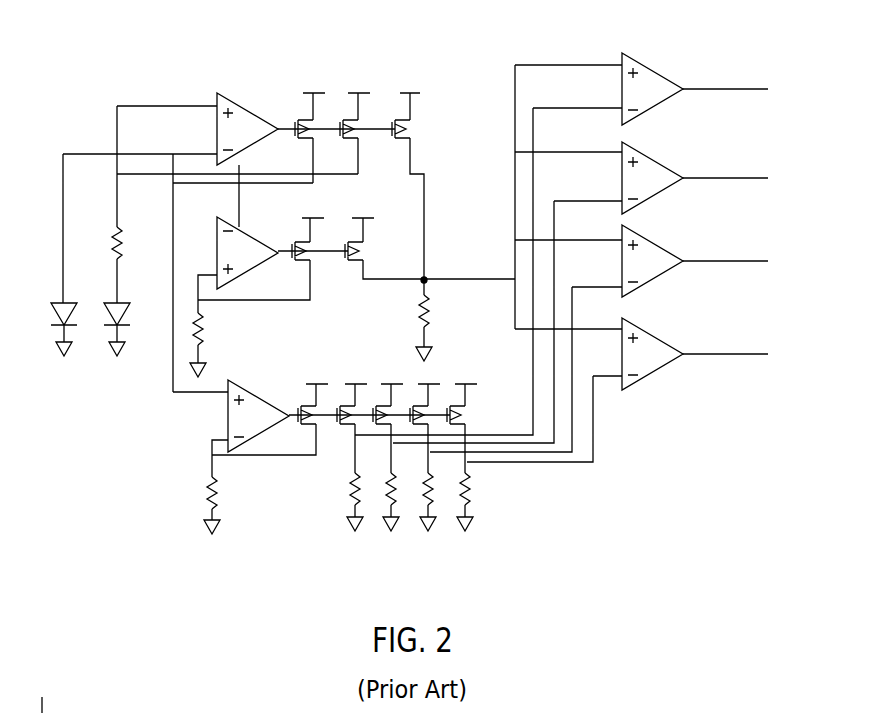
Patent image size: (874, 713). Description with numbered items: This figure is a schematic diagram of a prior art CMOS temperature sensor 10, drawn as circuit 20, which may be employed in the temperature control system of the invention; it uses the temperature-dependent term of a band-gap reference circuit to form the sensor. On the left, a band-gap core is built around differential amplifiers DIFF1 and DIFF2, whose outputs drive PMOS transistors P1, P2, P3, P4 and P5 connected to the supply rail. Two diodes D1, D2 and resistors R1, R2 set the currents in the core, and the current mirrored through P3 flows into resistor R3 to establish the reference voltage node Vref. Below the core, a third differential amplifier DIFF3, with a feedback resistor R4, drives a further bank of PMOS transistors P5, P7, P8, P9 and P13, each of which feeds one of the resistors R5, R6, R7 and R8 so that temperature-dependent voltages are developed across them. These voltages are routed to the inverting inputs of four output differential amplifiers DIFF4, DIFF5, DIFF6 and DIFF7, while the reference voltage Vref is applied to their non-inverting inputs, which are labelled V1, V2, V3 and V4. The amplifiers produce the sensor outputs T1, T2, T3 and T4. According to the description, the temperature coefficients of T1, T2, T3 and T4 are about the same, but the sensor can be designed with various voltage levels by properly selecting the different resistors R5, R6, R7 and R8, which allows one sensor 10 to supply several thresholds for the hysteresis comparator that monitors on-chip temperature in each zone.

The reference voltage generating circuit 20 is at (392, 21).
The temperature sensor 10 is at (165, 480).
The differential amplifier DIFF1 is at (248, 120).
The differential amplifier DIFF2 is at (255, 243).
The differential amplifier DIFF3 is at (262, 408).
The differential amplifier DIFF4 is at (662, 81).
The differential amplifier DIFF5 is at (662, 172).
The differential amplifier DIFF6 is at (662, 259).
The differential amplifier DIFF7 is at (662, 348).
The PMOS transistor P1 is at (303, 115).
The PMOS transistor P2 is at (348, 115).
The PMOS transistor P3 is at (397, 115).
The PMOS transistor P4 is at (303, 239).
The PMOS transistor P5 is at (328, 321).
The PMOS transistor P7 is at (344, 404).
The PMOS transistor P8 is at (380, 404).
The PMOS transistor P9 is at (418, 404).
The PMOS transistor P13 is at (455, 404).
The resistor R1 is at (130, 243).
The resistor R2 is at (214, 345).
The resistor R3 is at (436, 320).
The resistor R4 is at (224, 505).
The resistor R5 is at (366, 502).
The resistor R6 is at (405, 502).
The resistor R7 is at (442, 502).
The resistor R8 is at (476, 502).
The diode D1 is at (53, 316).
The diode D2 is at (109, 316).
The reference voltage node Vref is at (451, 269).
The input voltage V1 is at (568, 82).
The input voltage V2 is at (568, 168).
The input voltage V3 is at (568, 256).
The input voltage V4 is at (568, 343).
The temperature sensor output T1 is at (725, 74).
The temperature sensor output T2 is at (725, 162).
The temperature sensor output T3 is at (725, 246).
The temperature sensor output T4 is at (725, 336).